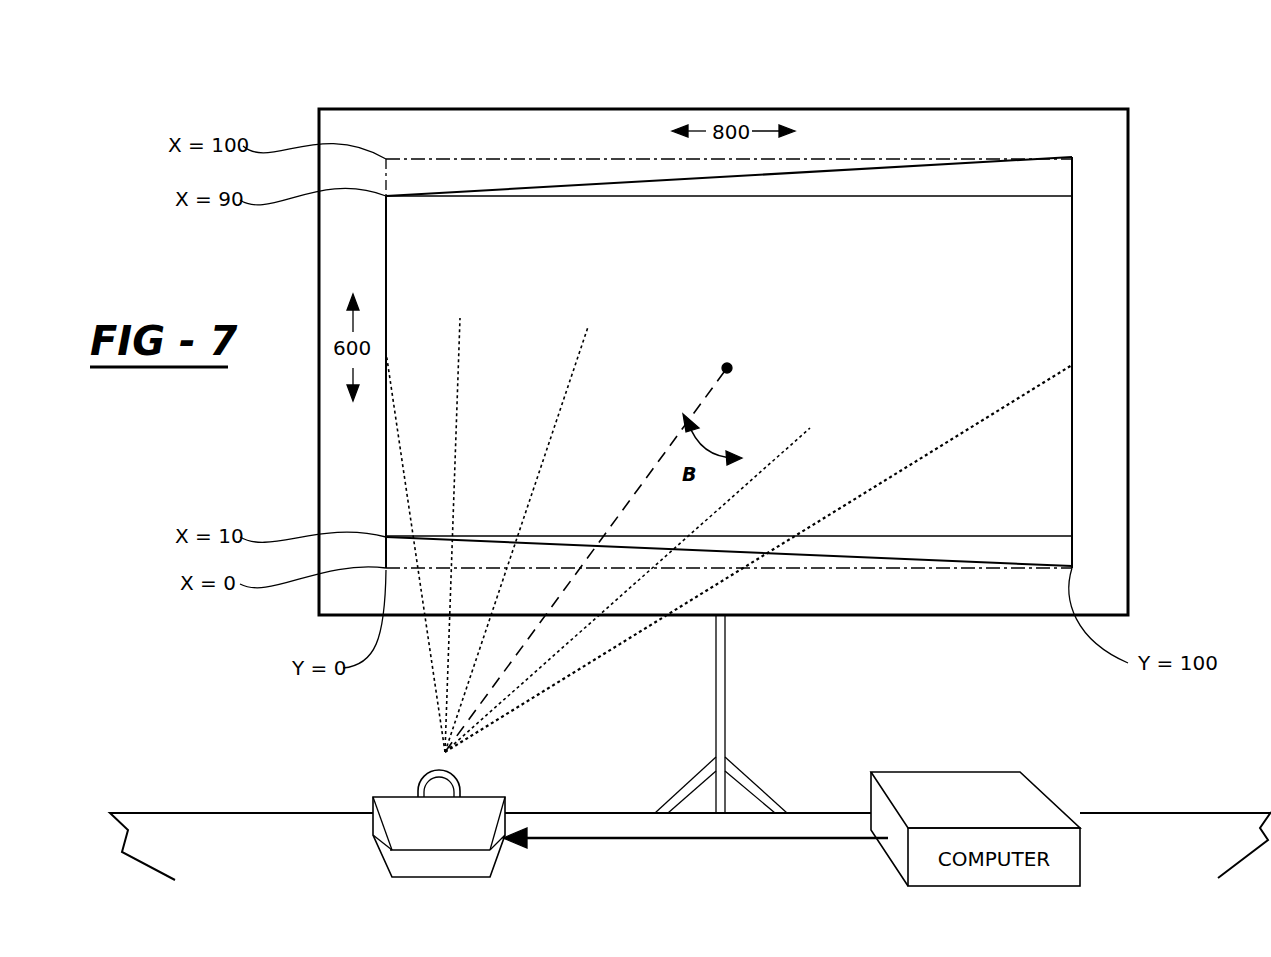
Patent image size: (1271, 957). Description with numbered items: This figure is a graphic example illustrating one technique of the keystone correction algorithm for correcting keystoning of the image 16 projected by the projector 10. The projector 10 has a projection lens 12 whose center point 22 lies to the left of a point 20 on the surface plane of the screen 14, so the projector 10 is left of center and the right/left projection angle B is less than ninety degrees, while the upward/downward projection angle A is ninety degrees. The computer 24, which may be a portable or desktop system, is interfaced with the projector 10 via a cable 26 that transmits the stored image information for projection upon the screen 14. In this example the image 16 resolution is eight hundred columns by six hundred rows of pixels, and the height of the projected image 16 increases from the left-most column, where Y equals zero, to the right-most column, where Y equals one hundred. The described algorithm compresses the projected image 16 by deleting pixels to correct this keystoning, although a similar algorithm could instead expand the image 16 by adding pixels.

The projector 10 is at (400, 815).
The projection lens 12 is at (448, 785).
The screen 14 is at (1093, 137).
The image 16 is at (1025, 305).
The point 20 is at (727, 368).
The center point 22 is at (445, 750).
The computer 24 is at (1022, 797).
The cable 26 is at (612, 835).